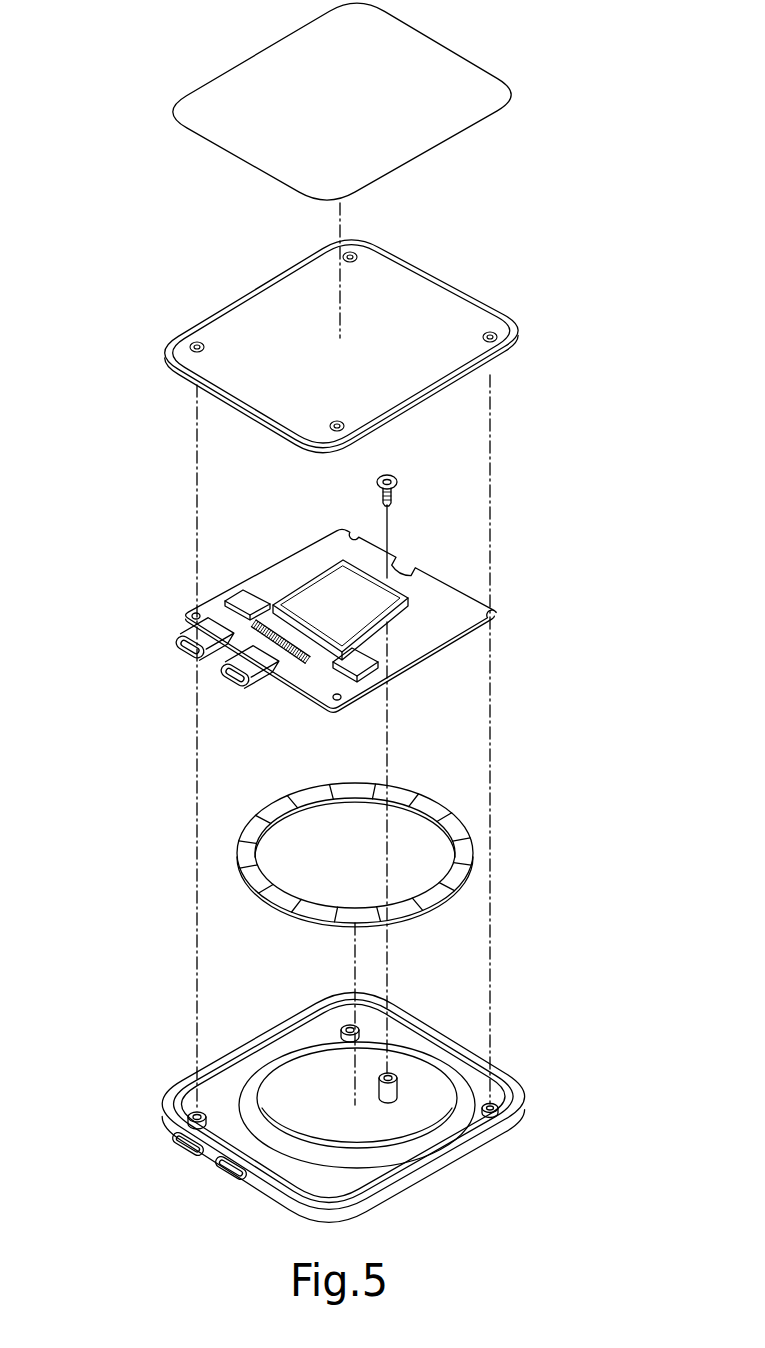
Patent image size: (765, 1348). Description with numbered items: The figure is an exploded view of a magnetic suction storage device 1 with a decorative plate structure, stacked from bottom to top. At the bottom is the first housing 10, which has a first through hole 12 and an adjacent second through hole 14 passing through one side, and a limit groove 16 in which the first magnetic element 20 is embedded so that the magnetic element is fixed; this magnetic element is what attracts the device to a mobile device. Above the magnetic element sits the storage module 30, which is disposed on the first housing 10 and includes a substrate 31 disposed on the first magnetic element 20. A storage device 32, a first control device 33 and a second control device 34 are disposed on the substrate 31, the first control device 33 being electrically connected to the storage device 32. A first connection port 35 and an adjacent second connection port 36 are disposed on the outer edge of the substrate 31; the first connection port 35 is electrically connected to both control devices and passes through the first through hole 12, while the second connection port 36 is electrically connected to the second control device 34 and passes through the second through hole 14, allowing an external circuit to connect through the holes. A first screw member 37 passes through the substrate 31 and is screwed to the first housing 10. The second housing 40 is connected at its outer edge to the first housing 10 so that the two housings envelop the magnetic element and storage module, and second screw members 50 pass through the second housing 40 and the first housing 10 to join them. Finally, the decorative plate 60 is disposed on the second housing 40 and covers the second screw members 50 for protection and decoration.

The magnetic suction storage device 1 is at (635, 89).
The first housing 10 is at (165, 1098).
The first through hole 12 is at (187, 1152).
The second through hole 14 is at (228, 1176).
The limit groove 16 is at (276, 1060).
The first magnetic element 20 is at (243, 835).
The storage module 30 is at (127, 530).
The substrate 31 is at (322, 534).
The storage device 32 is at (303, 580).
The first control device 33 is at (238, 597).
The second control device 34 is at (376, 654).
The first connection port 35 is at (180, 652).
The second connection port 36 is at (243, 682).
The first screw member 37 is at (393, 477).
The second housing 40 is at (186, 325).
The second screw member 50 is at (207, 343).
The decorative plate 60 is at (212, 73).